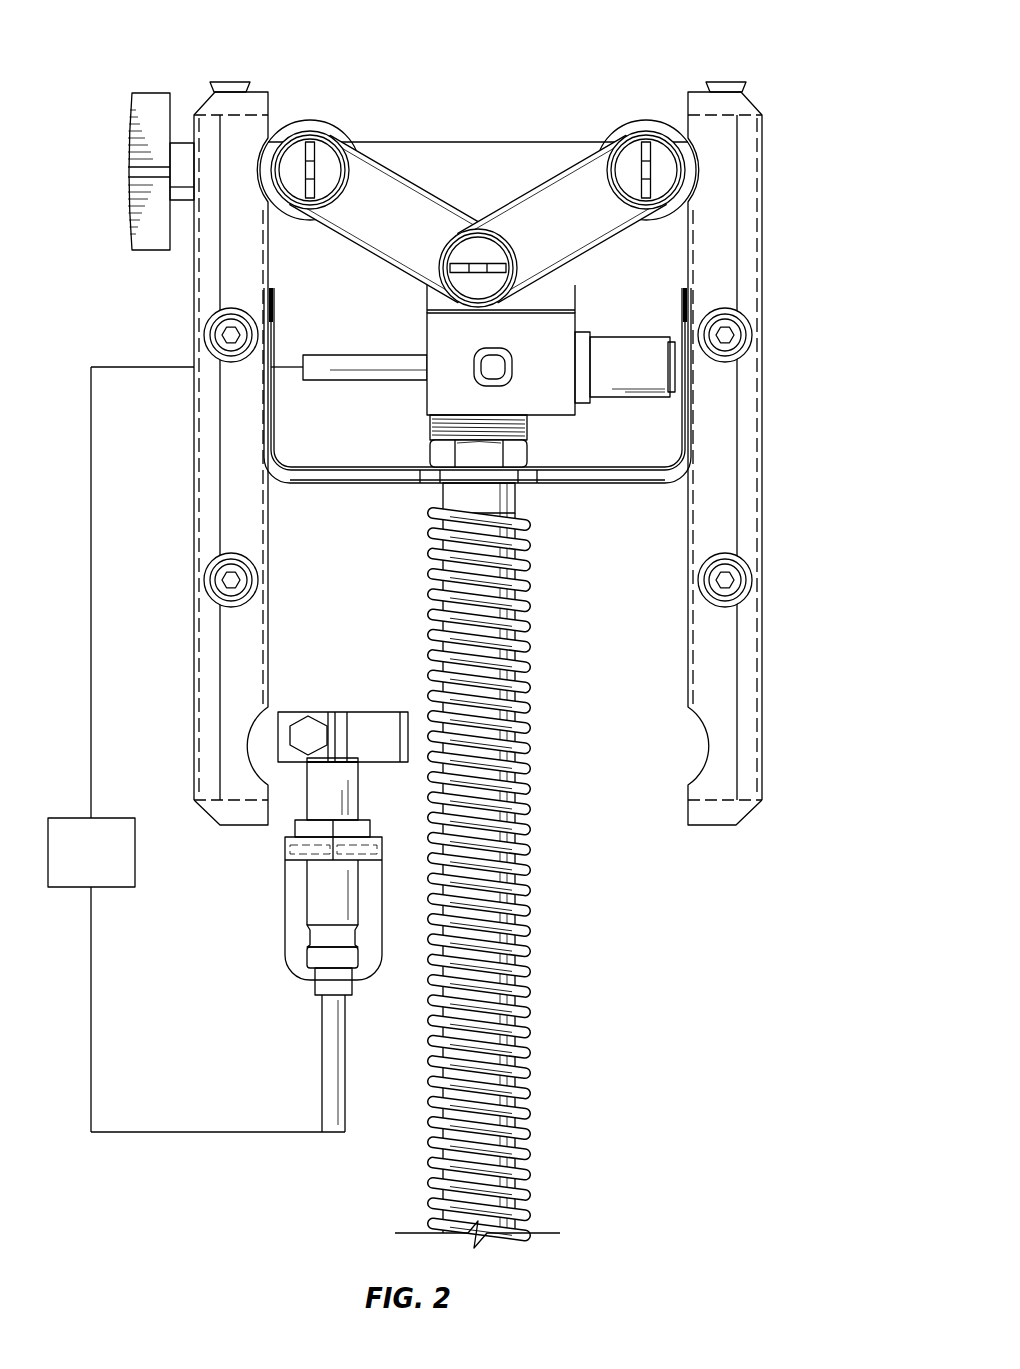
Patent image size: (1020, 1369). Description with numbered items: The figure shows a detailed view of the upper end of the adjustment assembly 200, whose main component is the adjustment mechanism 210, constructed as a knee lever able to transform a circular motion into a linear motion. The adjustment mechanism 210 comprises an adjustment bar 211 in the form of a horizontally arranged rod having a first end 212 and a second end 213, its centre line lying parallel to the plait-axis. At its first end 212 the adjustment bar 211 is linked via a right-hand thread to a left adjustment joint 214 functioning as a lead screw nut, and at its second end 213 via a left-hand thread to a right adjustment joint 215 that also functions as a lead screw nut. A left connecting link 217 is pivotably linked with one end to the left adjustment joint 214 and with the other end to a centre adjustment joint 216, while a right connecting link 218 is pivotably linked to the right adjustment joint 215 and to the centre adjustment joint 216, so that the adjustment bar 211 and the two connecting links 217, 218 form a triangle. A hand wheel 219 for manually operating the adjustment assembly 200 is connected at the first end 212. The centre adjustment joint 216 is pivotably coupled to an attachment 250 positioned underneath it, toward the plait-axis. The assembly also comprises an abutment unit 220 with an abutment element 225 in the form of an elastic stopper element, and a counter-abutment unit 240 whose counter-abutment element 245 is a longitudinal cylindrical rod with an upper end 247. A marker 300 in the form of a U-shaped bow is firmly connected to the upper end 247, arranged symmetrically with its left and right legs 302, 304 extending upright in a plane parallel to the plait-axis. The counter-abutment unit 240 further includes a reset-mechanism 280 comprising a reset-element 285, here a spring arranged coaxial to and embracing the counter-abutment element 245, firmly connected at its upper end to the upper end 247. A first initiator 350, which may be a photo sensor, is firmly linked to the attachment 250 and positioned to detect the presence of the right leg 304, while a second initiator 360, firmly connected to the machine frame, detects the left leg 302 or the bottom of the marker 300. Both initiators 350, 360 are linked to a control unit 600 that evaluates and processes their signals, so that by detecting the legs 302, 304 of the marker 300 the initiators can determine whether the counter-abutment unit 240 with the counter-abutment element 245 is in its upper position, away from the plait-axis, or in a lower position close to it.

The adjustment assembly 200 is at (472, 625).
The adjustment mechanism 210 is at (478, 194).
The adjustment bar 211 is at (465, 138).
The first end 212 is at (274, 135).
The second end 213 is at (684, 134).
The left adjustment joint 214 is at (322, 150).
The right adjustment joint 215 is at (633, 148).
The centre adjustment joint 216 is at (488, 252).
The left connecting link 217 is at (393, 168).
The right connecting link 218 is at (568, 170).
The hand wheel 219 is at (126, 170).
The abutment unit 220 is at (415, 452).
The abutment element 225 is at (527, 423).
The counter-abutment unit 240 is at (534, 865).
The counter-abutment element 245 is at (505, 930).
The upper end 247 is at (540, 502).
The attachment 250 is at (427, 300).
The reset-mechanism 280 is at (543, 874).
The reset-element 285 is at (528, 877).
The marker 300 is at (477, 405).
The left leg 302 is at (275, 420).
The right leg 304 is at (683, 408).
The first initiator 350 is at (603, 337).
The second initiator 360 is at (284, 908).
The control unit 600 is at (114, 866).